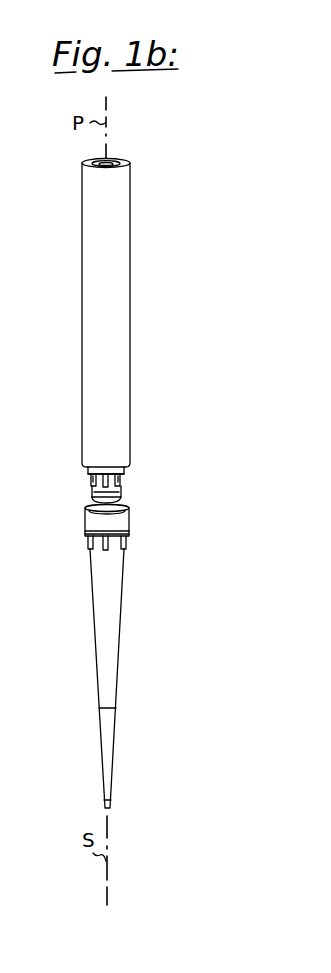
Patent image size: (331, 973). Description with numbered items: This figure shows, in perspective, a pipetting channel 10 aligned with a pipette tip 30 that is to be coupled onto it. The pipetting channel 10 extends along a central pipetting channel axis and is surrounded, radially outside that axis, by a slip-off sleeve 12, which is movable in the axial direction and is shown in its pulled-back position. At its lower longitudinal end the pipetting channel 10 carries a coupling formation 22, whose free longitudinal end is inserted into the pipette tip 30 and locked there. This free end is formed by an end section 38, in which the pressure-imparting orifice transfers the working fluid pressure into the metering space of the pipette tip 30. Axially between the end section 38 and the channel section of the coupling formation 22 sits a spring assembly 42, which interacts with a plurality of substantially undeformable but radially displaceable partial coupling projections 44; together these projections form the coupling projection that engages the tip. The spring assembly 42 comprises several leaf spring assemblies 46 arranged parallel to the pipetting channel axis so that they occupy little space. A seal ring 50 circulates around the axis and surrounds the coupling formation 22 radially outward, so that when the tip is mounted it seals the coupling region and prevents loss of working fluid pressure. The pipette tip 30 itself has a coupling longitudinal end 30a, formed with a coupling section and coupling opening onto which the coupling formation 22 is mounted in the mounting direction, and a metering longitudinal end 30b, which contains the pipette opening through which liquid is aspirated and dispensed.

The pipetting channel 10 is at (171, 286).
The slip-off sleeve 12 is at (117, 386).
The coupling formation 22 is at (138, 485).
The pipette tip 30 is at (105, 620).
The coupling longitudinal end 30a is at (141, 529).
The metering longitudinal end 30b is at (119, 805).
The end section 38 is at (95, 493).
The spring assembly 42 is at (134, 473).
The partial coupling projections 44 is at (100, 477).
The leaf spring assemblies 46 is at (88, 486).
The seal ring 50 is at (129, 471).